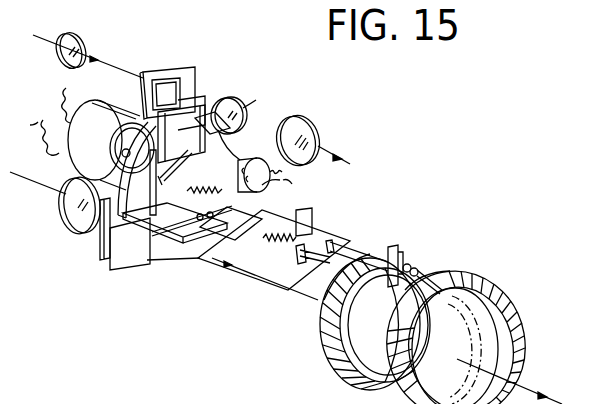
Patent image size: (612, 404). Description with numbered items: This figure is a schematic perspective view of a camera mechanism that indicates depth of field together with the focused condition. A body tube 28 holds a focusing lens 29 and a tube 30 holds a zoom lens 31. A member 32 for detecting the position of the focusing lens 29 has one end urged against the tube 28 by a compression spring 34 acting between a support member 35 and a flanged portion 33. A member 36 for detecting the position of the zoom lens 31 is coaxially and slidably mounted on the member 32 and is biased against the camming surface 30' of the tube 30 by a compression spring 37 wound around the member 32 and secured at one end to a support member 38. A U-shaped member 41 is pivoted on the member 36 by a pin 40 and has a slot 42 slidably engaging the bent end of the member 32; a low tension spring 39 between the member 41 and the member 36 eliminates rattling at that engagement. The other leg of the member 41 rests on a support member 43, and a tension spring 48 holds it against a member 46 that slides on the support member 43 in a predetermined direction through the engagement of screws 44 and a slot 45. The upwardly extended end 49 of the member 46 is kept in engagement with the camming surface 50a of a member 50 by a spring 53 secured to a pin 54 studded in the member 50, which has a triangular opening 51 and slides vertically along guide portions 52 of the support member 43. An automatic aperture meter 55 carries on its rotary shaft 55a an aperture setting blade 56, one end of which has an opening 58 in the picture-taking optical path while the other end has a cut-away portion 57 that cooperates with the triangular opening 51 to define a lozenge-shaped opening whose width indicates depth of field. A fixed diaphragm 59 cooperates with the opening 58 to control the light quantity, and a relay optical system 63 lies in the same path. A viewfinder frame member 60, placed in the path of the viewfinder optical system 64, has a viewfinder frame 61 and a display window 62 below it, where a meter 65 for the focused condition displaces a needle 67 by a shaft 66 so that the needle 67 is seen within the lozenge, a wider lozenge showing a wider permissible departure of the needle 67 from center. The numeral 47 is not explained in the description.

The body tube 28 is at (507, 295).
The focusing lens 29 is at (455, 346).
The tube 30 is at (356, 324).
The camming surface 30' is at (329, 325).
The zoom lens 31 is at (388, 325).
The member for detecting the position of the focusing lens 32 is at (451, 272).
The flanged portion 33 is at (421, 267).
The compression spring 34 is at (411, 256).
The support member 35 is at (400, 247).
The member for detecting the position of the zoom lens 36 is at (344, 247).
The compression spring 37 is at (347, 281).
The support member 38 is at (293, 258).
The low tension spring 39 is at (334, 248).
The pin 40 is at (252, 246).
The member 41 is at (224, 241).
The slot 42 is at (296, 219).
The support member 43 is at (147, 262).
The screws 44 is at (209, 219).
The slot 45 is at (170, 236).
The member 46 is at (130, 255).
The spring 47 is at (302, 214).
The tension spring 48 is at (243, 232).
The end of the member 49 is at (226, 152).
The member 50 is at (219, 103).
The camming surface 50a is at (222, 157).
The triangular opening 51 is at (206, 118).
The guide portions 52 is at (144, 182).
The spring 53 is at (168, 156).
The pin 54 is at (180, 140).
The automatic aperture meter 55 is at (97, 110).
The rotary shaft 55a is at (122, 153).
The aperture setting blade 56 is at (127, 142).
The cut-away portion 57 is at (200, 108).
The opening 58 is at (113, 245).
The fixed diaphragm 59 is at (100, 246).
The viewfinder frame member 60 is at (160, 70).
The viewfinder frame 61 is at (182, 84).
The display window 62 is at (157, 114).
The relay optical system 63 is at (66, 221).
The optical system 64 is at (84, 43).
The meter for indicating the focused condition 65 is at (280, 179).
The shaft 66 is at (203, 137).
The needle 67 is at (243, 108).